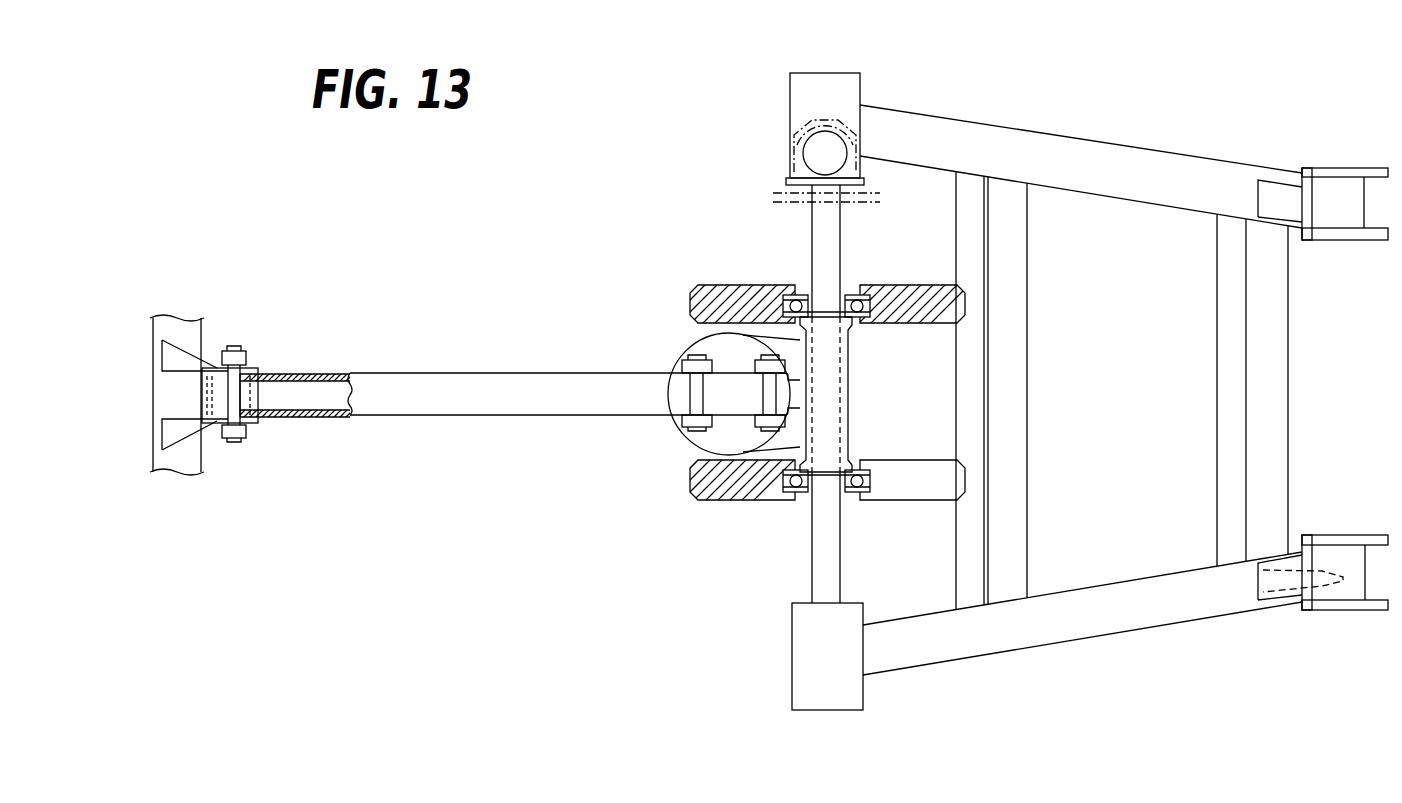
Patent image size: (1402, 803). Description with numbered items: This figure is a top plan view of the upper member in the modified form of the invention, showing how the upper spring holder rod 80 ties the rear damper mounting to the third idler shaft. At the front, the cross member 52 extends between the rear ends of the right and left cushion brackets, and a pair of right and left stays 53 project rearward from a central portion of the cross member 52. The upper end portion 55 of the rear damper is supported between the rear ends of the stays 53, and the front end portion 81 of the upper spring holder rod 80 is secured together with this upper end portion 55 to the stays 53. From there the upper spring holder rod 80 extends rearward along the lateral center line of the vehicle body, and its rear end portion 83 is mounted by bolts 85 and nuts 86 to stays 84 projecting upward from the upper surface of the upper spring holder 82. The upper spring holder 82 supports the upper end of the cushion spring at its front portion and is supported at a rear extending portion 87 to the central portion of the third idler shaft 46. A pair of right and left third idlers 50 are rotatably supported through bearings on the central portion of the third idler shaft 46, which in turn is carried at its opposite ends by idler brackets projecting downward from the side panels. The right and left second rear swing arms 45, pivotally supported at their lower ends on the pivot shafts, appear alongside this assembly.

The second rear swing arm 45 is at (1005, 140).
The third idler shaft 46 is at (835, 238).
The third idler 50 is at (746, 285).
The cross member 52 is at (165, 400).
The stay 53 is at (180, 360).
The upper end portion of rear damper 55 is at (262, 393).
The upper spring holder rod 80 is at (547, 372).
The front end portion of upper spring holder rod 81 is at (283, 418).
The upper spring holder 82 is at (680, 367).
The rear end portion of upper spring holder rod 83 is at (732, 420).
The stay 84 is at (675, 372).
The bolt 85 is at (695, 432).
The nut 86 is at (680, 366).
The rear extending portion 87 is at (833, 368).